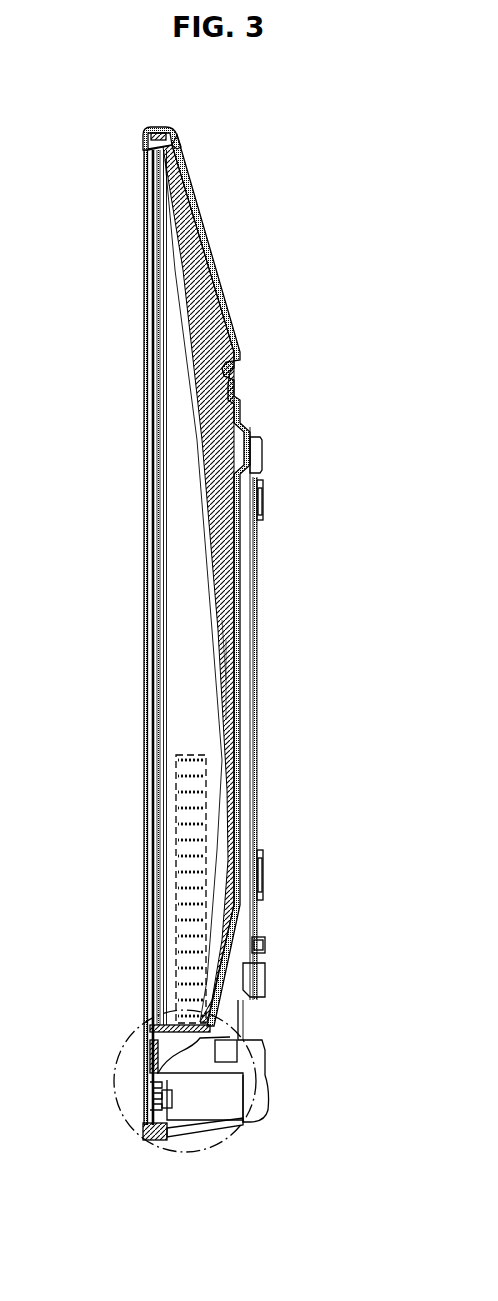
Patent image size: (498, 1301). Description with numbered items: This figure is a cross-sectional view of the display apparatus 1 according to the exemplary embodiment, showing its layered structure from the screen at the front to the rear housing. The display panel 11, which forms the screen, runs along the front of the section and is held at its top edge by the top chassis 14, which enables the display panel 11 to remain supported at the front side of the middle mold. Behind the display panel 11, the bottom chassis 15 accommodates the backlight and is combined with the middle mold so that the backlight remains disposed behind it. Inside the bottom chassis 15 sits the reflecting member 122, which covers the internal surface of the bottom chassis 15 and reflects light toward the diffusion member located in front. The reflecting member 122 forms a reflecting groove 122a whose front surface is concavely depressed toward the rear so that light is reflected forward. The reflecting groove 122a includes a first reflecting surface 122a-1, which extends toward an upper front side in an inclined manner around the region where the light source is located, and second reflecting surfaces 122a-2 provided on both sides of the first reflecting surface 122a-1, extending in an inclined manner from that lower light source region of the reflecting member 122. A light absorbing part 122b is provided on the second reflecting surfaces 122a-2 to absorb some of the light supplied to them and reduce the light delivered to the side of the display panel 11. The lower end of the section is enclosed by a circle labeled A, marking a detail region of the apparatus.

The display apparatus 1 is at (76, 157).
The display panel 11 is at (138, 322).
The top chassis 14 is at (157, 127).
The bottom chassis 15 is at (262, 552).
The reflecting member 122 is at (222, 298).
The reflecting groove 122a is at (341, 647).
The first reflecting surface 122a-1 is at (226, 638).
The second reflecting surface 122a-2 is at (196, 710).
The light absorbing part 122b is at (207, 827).
The detail region A is at (118, 1066).